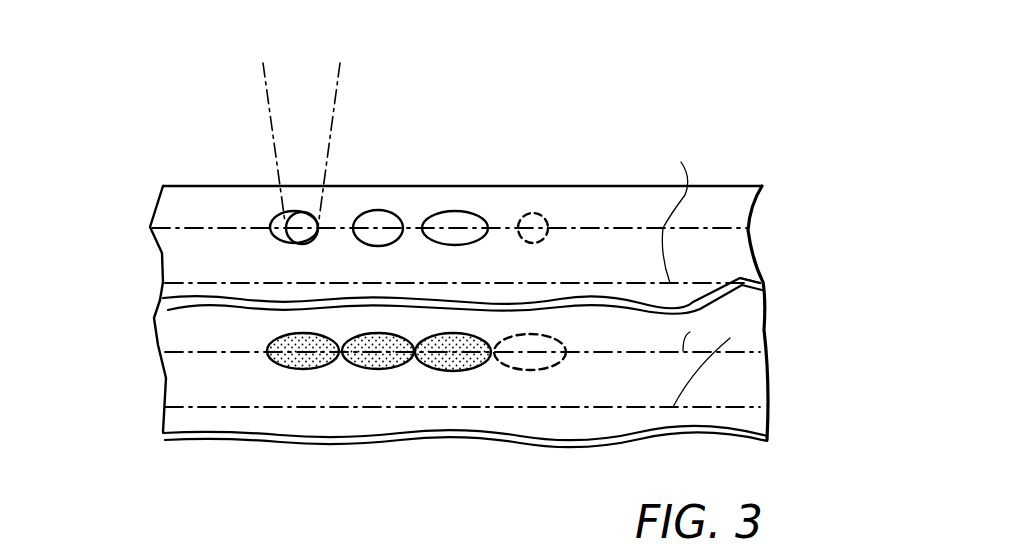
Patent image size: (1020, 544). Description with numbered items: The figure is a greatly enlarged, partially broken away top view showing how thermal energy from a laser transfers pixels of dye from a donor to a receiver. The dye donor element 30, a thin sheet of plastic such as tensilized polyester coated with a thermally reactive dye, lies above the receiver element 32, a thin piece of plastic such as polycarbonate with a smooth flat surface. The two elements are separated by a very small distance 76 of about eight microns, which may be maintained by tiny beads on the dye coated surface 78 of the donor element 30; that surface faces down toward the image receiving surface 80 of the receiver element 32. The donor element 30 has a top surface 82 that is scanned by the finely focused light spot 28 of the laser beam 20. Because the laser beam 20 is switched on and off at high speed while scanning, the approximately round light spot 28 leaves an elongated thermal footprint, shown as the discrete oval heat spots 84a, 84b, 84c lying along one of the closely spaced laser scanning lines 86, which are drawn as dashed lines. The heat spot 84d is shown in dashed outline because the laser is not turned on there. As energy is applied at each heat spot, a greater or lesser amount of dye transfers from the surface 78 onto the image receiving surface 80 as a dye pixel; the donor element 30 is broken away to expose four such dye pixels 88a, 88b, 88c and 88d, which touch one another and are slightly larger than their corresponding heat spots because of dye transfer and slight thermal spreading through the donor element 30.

The laser beam 20 is at (272, 125).
The focused light spot 28 is at (296, 220).
The dye donor element 30 is at (743, 210).
The receiver element 32 is at (758, 378).
The distance 76 is at (171, 313).
The dye coated surface 78 is at (738, 290).
The image receiving surface 80 is at (186, 377).
The top surface 82 is at (187, 255).
The heat spot 84a is at (320, 227).
The heat spot 84b is at (397, 217).
The heat spot 84c is at (477, 213).
The heat spot 84d is at (532, 213).
The laser scanning line 86 is at (690, 275).
The dye pixel 88a is at (290, 368).
The dye pixel 88b is at (367, 368).
The dye pixel 88c is at (433, 370).
The dye pixel 88d is at (513, 368).